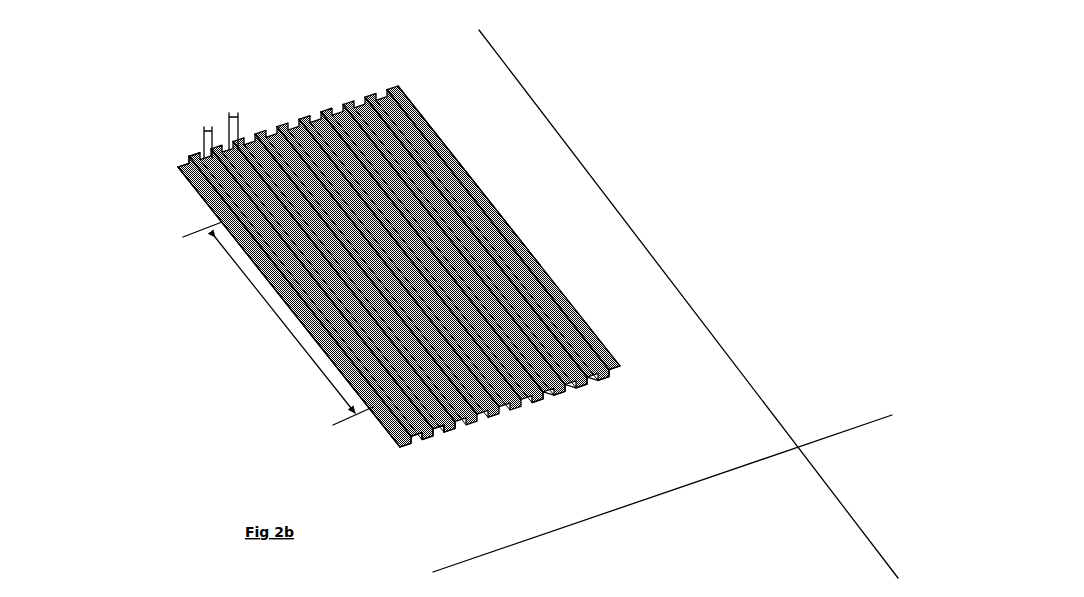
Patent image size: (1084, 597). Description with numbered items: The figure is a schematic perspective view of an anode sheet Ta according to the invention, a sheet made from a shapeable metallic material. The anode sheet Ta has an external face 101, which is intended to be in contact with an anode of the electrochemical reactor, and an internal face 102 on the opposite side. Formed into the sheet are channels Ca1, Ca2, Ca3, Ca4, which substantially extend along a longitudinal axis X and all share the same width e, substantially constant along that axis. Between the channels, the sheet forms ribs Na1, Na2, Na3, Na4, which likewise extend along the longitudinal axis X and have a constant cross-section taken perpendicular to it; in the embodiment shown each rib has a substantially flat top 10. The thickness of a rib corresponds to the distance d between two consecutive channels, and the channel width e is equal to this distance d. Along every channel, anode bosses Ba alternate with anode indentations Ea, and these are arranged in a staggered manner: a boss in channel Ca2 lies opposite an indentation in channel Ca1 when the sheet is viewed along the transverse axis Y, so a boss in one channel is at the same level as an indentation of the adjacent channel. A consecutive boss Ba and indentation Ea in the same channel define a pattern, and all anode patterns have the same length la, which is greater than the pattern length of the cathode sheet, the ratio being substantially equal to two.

The flat top 10 is at (590, 334).
The external face 101 is at (272, 215).
The internal face 102 is at (448, 467).
The anode sheet Ta is at (154, 160).
The channel width e is at (210, 127).
The distance between two consecutive channels d is at (237, 113).
The channel Ca1 is at (336, 112).
The channel Ca2 is at (355, 108).
The channel Ca3 is at (374, 100).
The channel Ca4 is at (389, 98).
The anode indentation Ea is at (425, 128).
The anode boss Ba is at (482, 203).
The rib Na1 is at (543, 406).
The rib Na2 is at (567, 400).
The rib Na3 is at (583, 390).
The rib Na4 is at (597, 393).
The pattern length la is at (278, 323).
The longitudinal axis X is at (693, 305).
The transverse axis Y is at (837, 437).